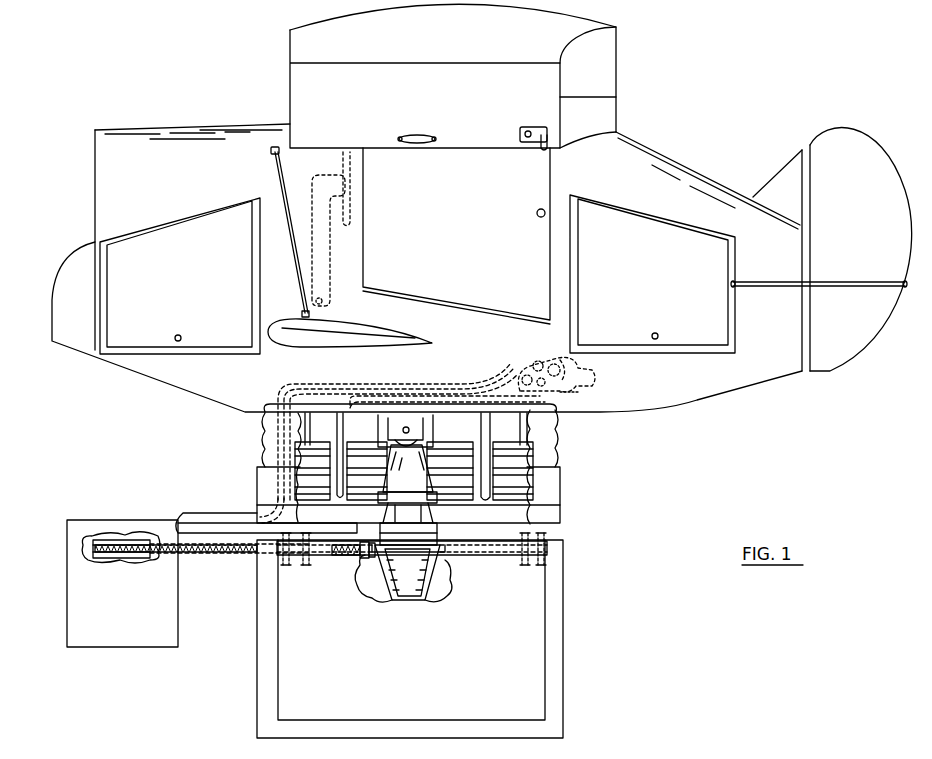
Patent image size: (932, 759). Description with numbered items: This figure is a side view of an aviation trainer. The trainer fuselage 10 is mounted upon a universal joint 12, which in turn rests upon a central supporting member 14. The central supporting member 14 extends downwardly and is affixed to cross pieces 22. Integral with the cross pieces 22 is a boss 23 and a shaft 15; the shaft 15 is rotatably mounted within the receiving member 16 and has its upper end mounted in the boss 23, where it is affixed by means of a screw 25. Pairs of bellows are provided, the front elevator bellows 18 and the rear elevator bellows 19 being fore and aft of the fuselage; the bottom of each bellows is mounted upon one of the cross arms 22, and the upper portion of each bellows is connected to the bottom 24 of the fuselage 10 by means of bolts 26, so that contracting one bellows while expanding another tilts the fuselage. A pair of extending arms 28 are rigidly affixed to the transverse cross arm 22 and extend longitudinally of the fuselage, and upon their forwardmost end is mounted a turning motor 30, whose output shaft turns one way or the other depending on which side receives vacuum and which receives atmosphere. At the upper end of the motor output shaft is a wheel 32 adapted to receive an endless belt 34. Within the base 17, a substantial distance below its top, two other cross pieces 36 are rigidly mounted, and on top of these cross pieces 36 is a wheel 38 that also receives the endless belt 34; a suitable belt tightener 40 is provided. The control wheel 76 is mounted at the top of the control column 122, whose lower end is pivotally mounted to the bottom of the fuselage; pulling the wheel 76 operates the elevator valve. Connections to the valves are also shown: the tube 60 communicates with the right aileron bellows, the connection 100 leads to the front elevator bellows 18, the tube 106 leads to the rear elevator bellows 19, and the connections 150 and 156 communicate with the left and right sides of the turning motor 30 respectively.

The fuselage 10 is at (651, 160).
The control wheel 76 is at (347, 164).
The control column 122 is at (323, 218).
The bottom of the trainer fuselage 24 is at (425, 404).
The connection 156 is at (537, 360).
The connection 150 is at (554, 364).
The tube 60 is at (521, 393).
The belt tightener 40 is at (594, 386).
The connection 100 is at (546, 394).
The tube 106 is at (571, 398).
The bolts 26 is at (305, 429).
The central supporting member 14 is at (400, 470).
The universal joint 12 is at (437, 430).
The front elevator bellows 18 is at (300, 470).
The rear elevator bellows 19 is at (525, 493).
The cross pieces 22 is at (437, 520).
The base 17 is at (563, 621).
The cross pieces 36 is at (452, 560).
The wheel 38 is at (398, 563).
The screw 25 is at (345, 557).
The shaft 15 is at (412, 592).
The receiving member 16 is at (425, 595).
The boss 23 is at (396, 580).
The extending arms 28 is at (188, 528).
The turning motor 30 is at (97, 641).
The endless belt 34 is at (228, 554).
The wheel 32 is at (120, 540).